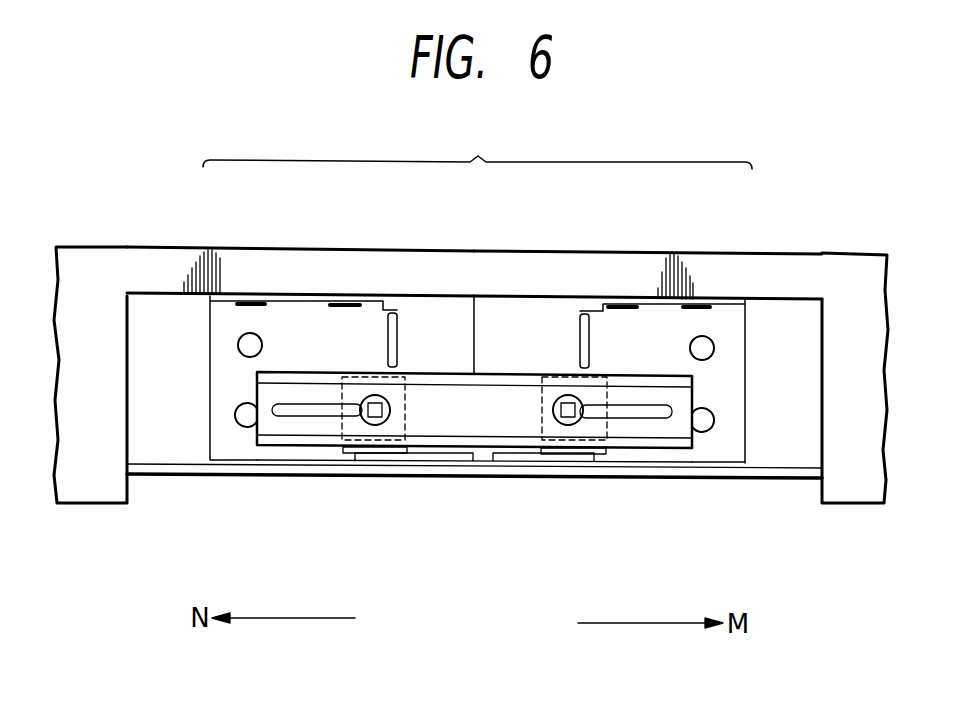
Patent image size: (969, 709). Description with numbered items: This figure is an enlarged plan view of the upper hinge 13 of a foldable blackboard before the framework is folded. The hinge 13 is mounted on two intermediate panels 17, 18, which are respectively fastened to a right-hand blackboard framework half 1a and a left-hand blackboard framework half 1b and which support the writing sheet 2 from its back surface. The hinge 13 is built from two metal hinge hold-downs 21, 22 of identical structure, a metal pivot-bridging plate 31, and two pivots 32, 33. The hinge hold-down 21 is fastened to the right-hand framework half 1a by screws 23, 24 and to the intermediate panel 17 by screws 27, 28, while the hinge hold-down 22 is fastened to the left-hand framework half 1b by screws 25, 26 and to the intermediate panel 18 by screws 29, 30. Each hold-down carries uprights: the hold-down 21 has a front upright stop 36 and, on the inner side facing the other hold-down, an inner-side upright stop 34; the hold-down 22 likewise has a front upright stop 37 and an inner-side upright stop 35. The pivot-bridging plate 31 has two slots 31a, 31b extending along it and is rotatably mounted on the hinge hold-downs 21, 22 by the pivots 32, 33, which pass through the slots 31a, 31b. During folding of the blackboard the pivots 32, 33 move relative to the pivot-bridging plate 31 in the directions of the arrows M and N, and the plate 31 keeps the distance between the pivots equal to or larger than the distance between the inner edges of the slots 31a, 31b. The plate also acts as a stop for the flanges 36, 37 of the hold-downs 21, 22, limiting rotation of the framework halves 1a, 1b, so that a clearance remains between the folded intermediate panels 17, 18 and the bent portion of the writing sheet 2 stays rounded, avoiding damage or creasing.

The right-hand blackboard framework half 1a is at (768, 265).
The left-hand blackboard framework half 1b is at (160, 265).
The writing sheet 2 is at (743, 476).
The upper hinge 13 is at (477, 148).
The intermediate panel 17 is at (522, 320).
The intermediate panel 18 is at (435, 327).
The hinge hold-down 21 is at (735, 391).
The hinge hold-down 22 is at (223, 377).
The screw 23 is at (698, 304).
The screw 24 is at (623, 304).
The screw 25 is at (250, 300).
The screw 26 is at (345, 302).
The screw 27 is at (708, 421).
The screw 28 is at (708, 348).
The screw 29 is at (245, 418).
The screw 30 is at (248, 347).
The pivot-bridging plate 31 is at (499, 422).
The slot 31a is at (638, 415).
The slot 31b is at (285, 412).
The pivot 32 is at (568, 420).
The pivot 33 is at (375, 418).
The inner-side upright stop 34 is at (585, 312).
The inner-side upright stop 35 is at (393, 312).
The front upright stop 36 is at (683, 464).
The front upright stop 37 is at (282, 455).